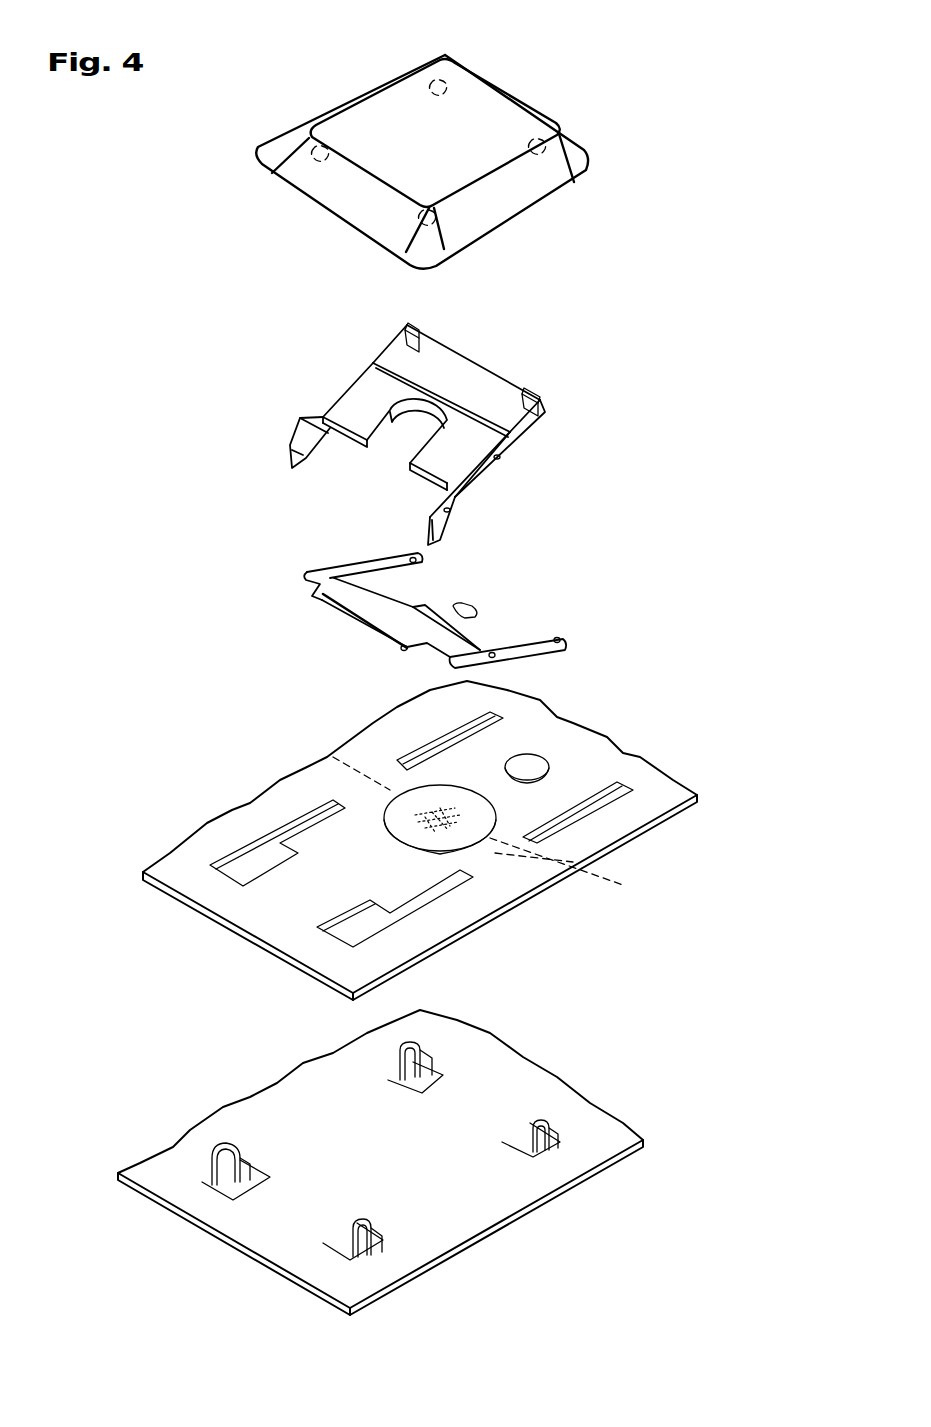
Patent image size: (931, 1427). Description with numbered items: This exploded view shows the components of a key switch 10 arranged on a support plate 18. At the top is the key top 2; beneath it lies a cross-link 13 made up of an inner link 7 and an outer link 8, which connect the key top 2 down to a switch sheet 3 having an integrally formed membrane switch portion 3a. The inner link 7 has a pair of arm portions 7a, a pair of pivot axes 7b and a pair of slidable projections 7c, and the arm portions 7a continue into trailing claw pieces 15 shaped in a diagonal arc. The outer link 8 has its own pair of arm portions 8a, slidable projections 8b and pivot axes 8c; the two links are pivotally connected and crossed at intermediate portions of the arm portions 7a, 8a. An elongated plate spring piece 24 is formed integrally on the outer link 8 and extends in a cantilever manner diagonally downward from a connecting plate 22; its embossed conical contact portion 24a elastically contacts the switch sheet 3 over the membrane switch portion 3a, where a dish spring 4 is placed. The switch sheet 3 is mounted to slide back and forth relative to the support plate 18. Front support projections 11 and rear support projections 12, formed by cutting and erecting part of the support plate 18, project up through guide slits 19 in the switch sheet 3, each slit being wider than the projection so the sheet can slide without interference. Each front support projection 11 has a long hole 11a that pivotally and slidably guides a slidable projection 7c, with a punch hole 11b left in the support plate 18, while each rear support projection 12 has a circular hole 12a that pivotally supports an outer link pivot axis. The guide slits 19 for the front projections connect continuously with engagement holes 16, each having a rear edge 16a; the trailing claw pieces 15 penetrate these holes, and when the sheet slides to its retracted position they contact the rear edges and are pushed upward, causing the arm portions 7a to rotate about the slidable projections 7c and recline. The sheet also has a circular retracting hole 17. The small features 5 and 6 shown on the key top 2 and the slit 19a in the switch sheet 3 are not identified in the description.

The key top 2 is at (468, 146).
The switch sheet 3 is at (457, 840).
The membrane switch portion 3a is at (500, 835).
The dish spring 4 is at (395, 812).
The feet of cover 5 is at (420, 224).
The feet of cover 6 is at (445, 82).
The inner link 7 is at (410, 410).
The arm portions 7a is at (320, 419).
The pivot axes 7b is at (538, 393).
The slidable projections 7c is at (450, 510).
The outer link 8 is at (469, 604).
The arm portions 8a is at (412, 565).
The slidable projections 8b is at (405, 652).
The pivot axes 8c is at (560, 642).
The key switch 10 is at (705, 237).
The front support projections 11 is at (220, 1157).
The long hole 11a is at (208, 1186).
The punch hole 11b is at (250, 1180).
The rear support projections 12 is at (415, 1070).
The circular hole 12a is at (410, 1049).
The cross-link 13 is at (625, 484).
The trailing claw pieces 15 is at (292, 464).
The engagement holes 16 is at (360, 915).
The rear edge 16a is at (283, 845).
The circular retracting hole 17 is at (535, 768).
The support plate 18 is at (426, 1155).
The guide slit 19 is at (299, 828).
The slot 19a is at (470, 730).
The connecting plate 22 is at (372, 607).
The plate spring piece 24 is at (466, 613).
The conical contact portion 24a is at (538, 617).